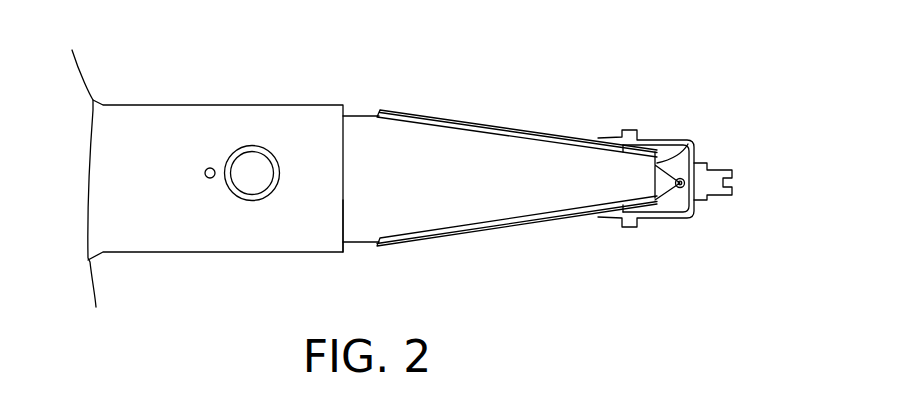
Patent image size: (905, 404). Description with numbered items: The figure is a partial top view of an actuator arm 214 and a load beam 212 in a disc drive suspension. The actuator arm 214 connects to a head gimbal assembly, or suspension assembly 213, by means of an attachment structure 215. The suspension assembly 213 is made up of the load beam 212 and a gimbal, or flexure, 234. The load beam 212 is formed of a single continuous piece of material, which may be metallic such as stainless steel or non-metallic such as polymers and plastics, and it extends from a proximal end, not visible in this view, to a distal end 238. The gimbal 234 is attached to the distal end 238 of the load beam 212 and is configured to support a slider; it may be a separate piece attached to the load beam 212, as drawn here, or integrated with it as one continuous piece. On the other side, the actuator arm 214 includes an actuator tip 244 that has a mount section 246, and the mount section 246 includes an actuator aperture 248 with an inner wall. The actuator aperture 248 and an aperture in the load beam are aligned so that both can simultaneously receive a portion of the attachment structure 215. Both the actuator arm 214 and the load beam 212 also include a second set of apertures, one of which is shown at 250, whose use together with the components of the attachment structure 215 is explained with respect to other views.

The load beam 212 is at (420, 138).
The suspension assembly 213 is at (560, 127).
The actuator arm 214 is at (235, 105).
The attachment structure 215 is at (278, 150).
The gimbal 234 is at (662, 140).
The distal end 238 is at (680, 147).
The actuator tip 244 is at (343, 217).
The mount section 246 is at (217, 200).
The actuator aperture 248 is at (268, 145).
The second set of apertures 250 is at (206, 169).